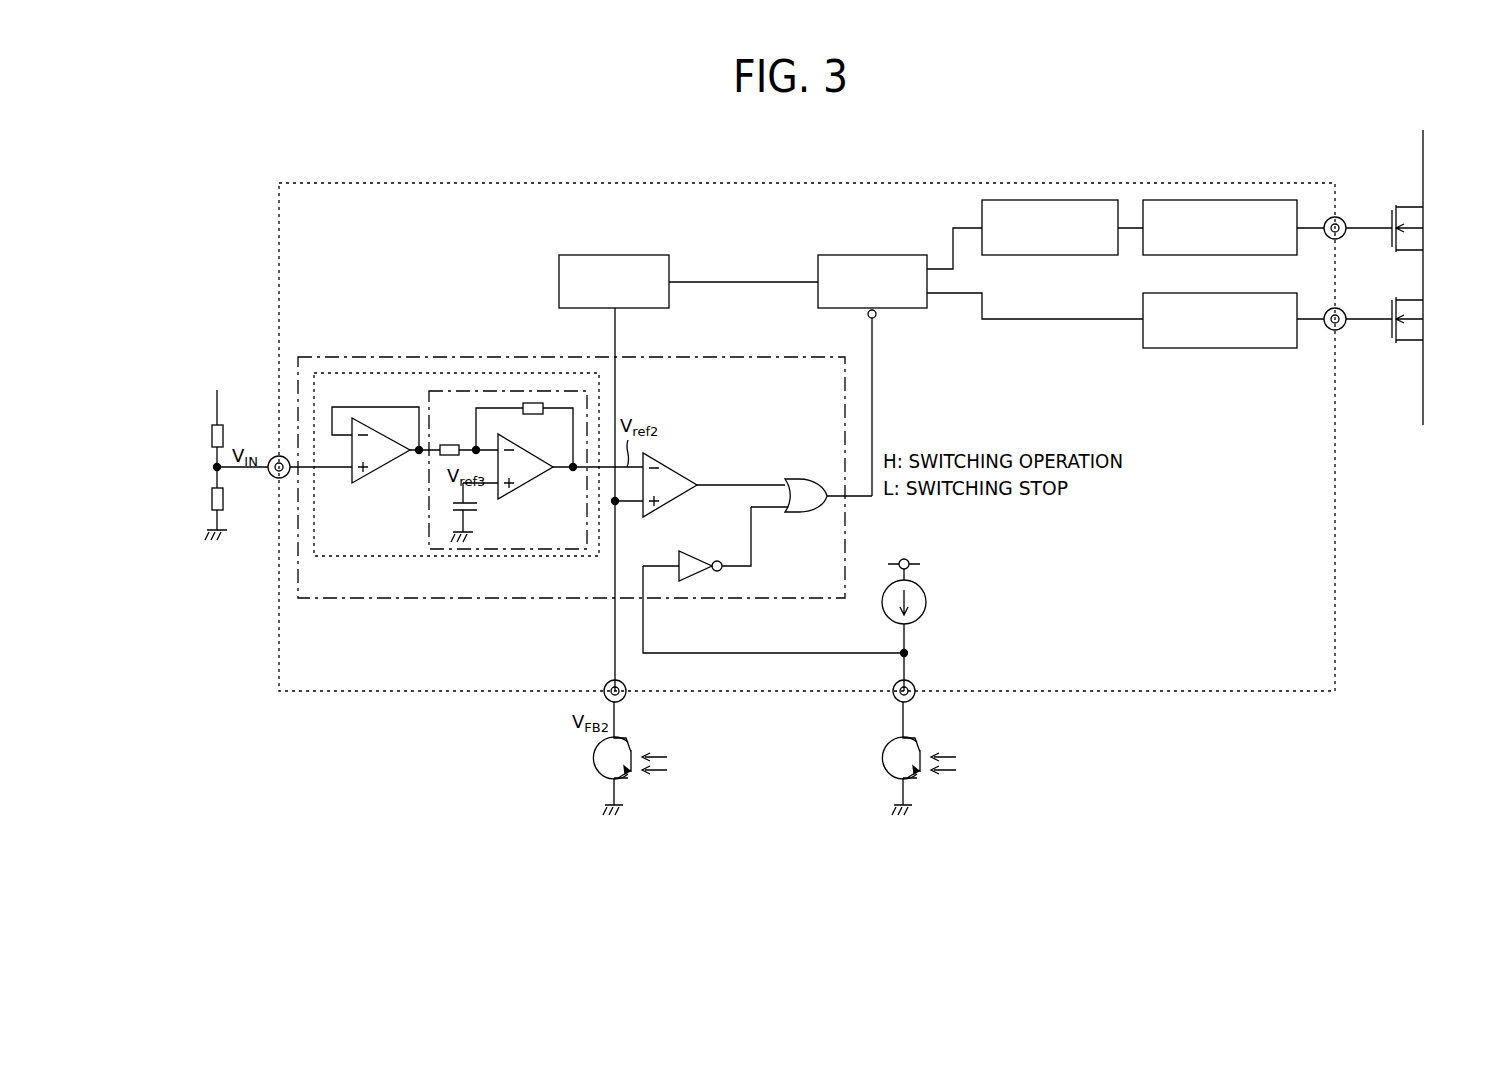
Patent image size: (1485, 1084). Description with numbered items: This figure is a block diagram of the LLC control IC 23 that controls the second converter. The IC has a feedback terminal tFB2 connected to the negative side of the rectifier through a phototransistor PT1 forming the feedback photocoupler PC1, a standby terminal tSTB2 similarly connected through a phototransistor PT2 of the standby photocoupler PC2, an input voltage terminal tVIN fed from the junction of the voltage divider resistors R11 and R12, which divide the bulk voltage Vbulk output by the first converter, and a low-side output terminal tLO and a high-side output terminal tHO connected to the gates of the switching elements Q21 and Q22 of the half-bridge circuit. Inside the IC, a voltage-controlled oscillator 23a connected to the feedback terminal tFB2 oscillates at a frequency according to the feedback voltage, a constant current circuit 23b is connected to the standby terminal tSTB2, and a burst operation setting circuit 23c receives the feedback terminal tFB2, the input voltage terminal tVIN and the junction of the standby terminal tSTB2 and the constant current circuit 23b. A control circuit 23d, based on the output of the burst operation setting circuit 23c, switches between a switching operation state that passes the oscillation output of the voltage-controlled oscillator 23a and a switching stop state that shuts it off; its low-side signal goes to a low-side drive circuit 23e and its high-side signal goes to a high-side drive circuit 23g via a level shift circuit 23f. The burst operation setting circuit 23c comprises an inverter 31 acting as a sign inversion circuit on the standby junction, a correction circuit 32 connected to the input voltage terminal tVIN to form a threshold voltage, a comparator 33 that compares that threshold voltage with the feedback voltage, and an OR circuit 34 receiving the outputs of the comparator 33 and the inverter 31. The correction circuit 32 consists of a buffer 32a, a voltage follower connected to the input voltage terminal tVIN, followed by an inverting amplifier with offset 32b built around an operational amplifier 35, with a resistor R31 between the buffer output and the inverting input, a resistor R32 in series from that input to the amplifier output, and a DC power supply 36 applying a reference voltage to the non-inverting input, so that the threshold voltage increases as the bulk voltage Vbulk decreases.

The LLC control IC 23 is at (512, 183).
The voltage-controlled oscillator 23a is at (632, 255).
The constant current circuit 23b is at (926, 600).
The burst operation setting circuit 23c is at (405, 357).
The control circuit 23d is at (846, 255).
The low-side drive circuit 23e is at (1198, 348).
The level shift circuit 23f is at (1046, 200).
The high-side drive circuit 23g is at (1202, 200).
The inverter 31 is at (705, 556).
The correction circuit 32 is at (400, 556).
The buffer 32a is at (380, 472).
The inverting amplifier with offset 32b is at (515, 556).
The comparator 33 is at (680, 462).
The OR circuit 34 is at (803, 480).
The operational amplifier 35 is at (530, 472).
The DC power supply 36 is at (455, 505).
The voltage divider resistor R11 is at (212, 438).
The voltage divider resistor R12 is at (212, 499).
The resistor R31 is at (450, 445).
The resistor R32 is at (534, 403).
The switching element Q21 is at (1386, 345).
The switching element Q22 is at (1385, 190).
The feedback photocoupler PC1 is at (607, 767).
The standby photocoupler PC2 is at (896, 767).
The phototransistor PT1 is at (628, 774).
The phototransistor PT2 is at (929, 758).
The input voltage terminal tVIN is at (272, 480).
The high-side output terminal tHO is at (1341, 217).
The low-side output terminal tLO is at (1341, 330).
The feedback terminal tFB2 is at (625, 698).
The standby terminal tSTB2 is at (914, 698).
The bulk voltage Vbulk is at (217, 394).